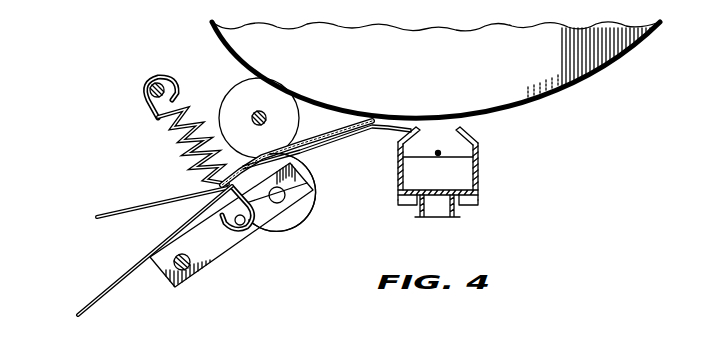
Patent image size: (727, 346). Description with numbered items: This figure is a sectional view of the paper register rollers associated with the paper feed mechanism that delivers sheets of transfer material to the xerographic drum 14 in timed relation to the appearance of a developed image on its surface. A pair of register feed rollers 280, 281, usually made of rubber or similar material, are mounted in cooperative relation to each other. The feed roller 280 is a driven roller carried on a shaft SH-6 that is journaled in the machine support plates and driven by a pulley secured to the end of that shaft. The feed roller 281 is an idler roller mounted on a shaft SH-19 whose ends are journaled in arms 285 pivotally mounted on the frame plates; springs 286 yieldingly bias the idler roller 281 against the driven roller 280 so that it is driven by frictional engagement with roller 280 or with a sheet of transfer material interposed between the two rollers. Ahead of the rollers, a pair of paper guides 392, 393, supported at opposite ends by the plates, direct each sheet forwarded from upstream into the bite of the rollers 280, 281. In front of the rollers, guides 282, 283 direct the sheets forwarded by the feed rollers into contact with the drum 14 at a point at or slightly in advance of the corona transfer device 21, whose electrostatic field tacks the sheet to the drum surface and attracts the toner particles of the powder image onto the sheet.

The xerographic drum 14 is at (605, 68).
The shaft SH-6 is at (267, 116).
The register feed roller 280 is at (225, 97).
The springs 286 is at (163, 132).
The guide 282 is at (356, 118).
The guide 283 is at (350, 136).
The corona transfer device 21 is at (480, 154).
The shaft SH-19 is at (312, 185).
The register feed roller 281 is at (296, 226).
The arms 285 is at (217, 258).
The paper guide 392 is at (120, 208).
The paper guide 393 is at (93, 299).